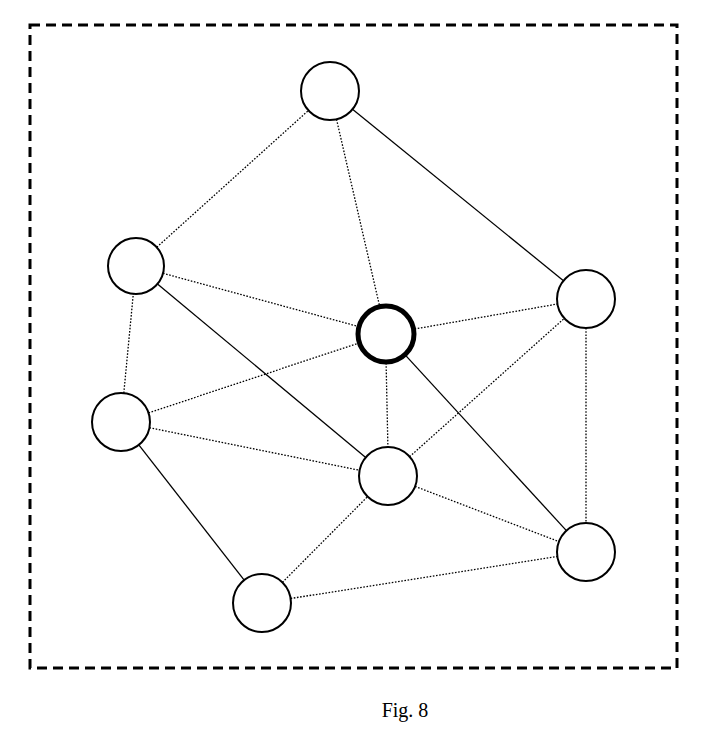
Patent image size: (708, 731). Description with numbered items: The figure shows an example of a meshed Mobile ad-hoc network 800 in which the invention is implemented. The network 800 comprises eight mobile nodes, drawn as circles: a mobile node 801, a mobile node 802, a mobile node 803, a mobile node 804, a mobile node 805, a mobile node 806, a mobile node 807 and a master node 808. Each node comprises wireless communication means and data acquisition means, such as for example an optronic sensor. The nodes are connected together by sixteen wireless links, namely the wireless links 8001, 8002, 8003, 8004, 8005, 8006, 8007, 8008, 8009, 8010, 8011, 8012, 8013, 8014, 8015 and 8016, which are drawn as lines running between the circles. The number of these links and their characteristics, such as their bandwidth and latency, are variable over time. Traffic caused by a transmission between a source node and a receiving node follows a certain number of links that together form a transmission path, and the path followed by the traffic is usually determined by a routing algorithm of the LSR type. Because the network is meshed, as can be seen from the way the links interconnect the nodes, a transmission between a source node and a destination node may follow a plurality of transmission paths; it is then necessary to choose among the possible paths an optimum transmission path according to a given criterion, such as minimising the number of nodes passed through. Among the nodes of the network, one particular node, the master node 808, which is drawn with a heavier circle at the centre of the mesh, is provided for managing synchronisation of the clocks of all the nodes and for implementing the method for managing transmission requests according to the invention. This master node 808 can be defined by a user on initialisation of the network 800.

The meshed mobile ad-hoc network 800 is at (353, 346).
The mobile node 801 is at (330, 91).
The mobile node 802 is at (136, 266).
The mobile node 803 is at (121, 422).
The mobile node 804 is at (262, 603).
The mobile node 805 is at (586, 552).
The mobile node 806 is at (586, 299).
The mobile node 807 is at (388, 476).
The master node 808 is at (386, 334).
The wireless link 8001 is at (233, 178).
The wireless link 8002 is at (260, 295).
The wireless link 8003 is at (458, 194).
The wireless link 8004 is at (262, 371).
The wireless link 8005 is at (120, 343).
The wireless link 8006 is at (486, 310).
The wireless link 8007 is at (254, 378).
The wireless link 8008 is at (254, 449).
The wireless link 8009 is at (599, 425).
The wireless link 8010 is at (486, 442).
The wireless link 8011 is at (487, 513).
The wireless link 8012 is at (324, 540).
The wireless link 8013 is at (424, 578).
The wireless link 8014 is at (364, 212).
The wireless link 8015 is at (378, 405).
The wireless link 8016 is at (487, 387).